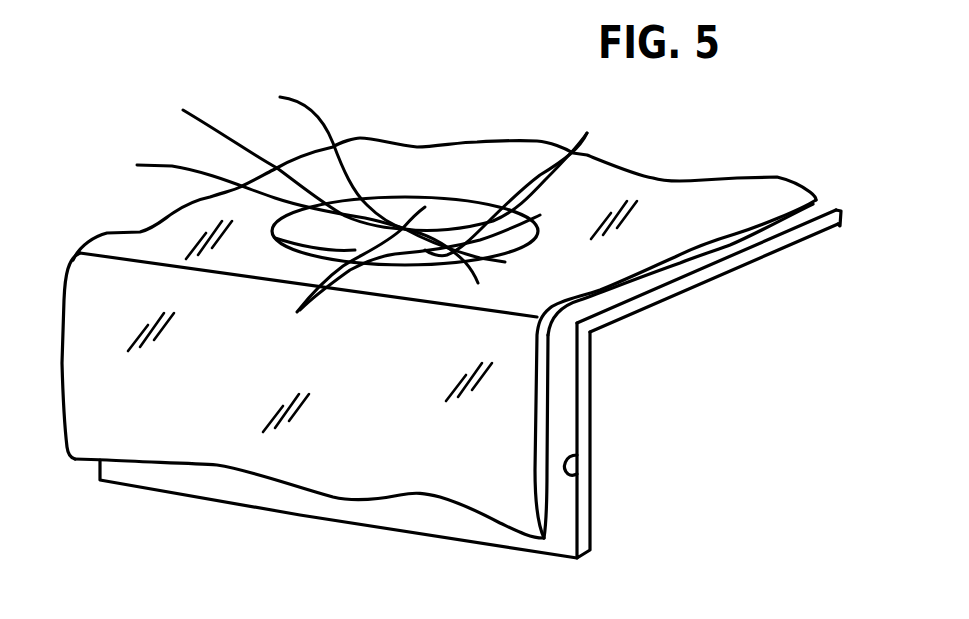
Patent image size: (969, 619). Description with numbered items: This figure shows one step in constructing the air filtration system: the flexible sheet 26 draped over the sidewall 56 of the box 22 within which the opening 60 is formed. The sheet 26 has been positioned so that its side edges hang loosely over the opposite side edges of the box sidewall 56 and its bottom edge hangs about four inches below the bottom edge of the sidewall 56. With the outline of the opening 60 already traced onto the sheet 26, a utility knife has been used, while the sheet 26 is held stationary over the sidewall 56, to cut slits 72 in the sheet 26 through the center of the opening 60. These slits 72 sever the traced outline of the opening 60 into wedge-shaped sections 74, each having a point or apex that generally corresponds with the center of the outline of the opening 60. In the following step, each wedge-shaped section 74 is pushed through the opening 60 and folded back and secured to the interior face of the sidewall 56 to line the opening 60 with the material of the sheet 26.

The box 22 is at (577, 474).
The flexible sheet 26 is at (587, 271).
The sidewall 56 is at (755, 237).
The opening 60 is at (453, 203).
The slits 72 is at (345, 206).
The wedge-shaped sections 74 is at (450, 212).